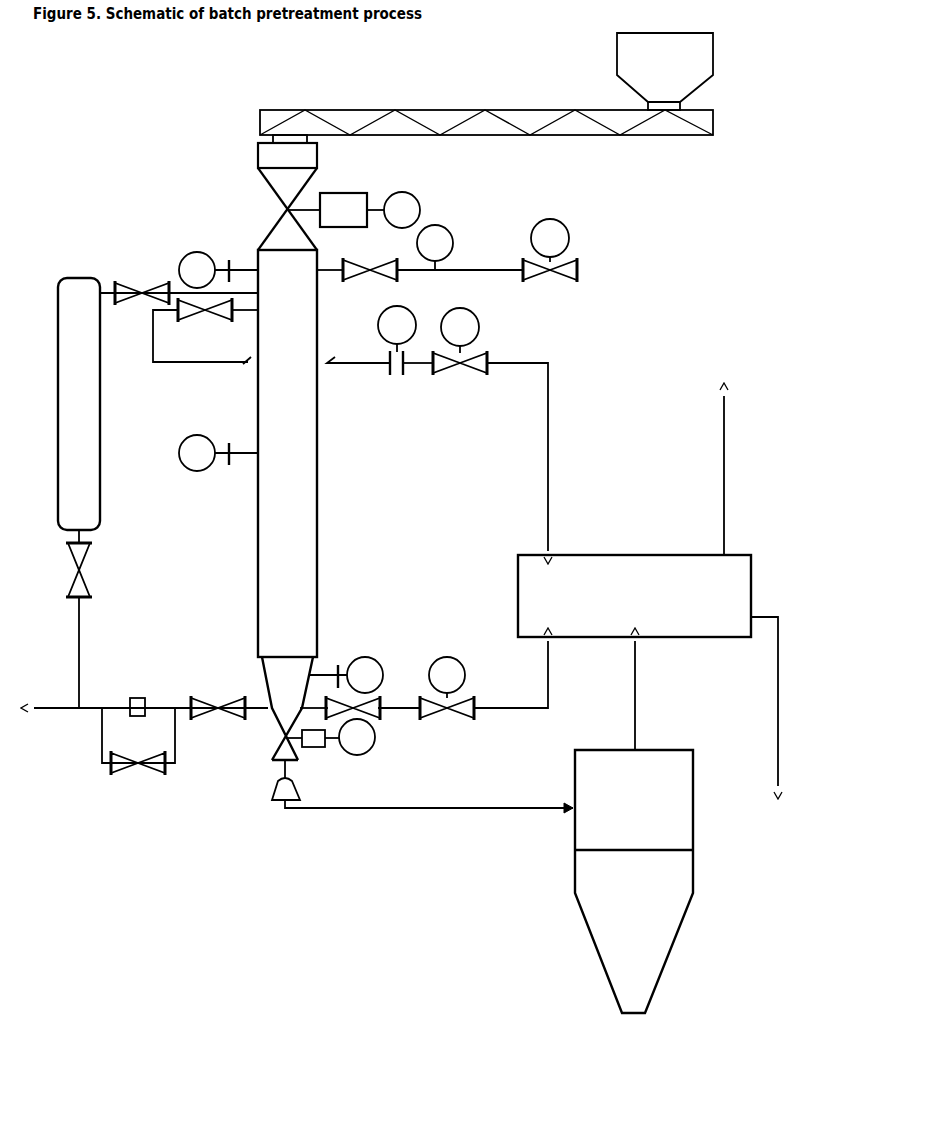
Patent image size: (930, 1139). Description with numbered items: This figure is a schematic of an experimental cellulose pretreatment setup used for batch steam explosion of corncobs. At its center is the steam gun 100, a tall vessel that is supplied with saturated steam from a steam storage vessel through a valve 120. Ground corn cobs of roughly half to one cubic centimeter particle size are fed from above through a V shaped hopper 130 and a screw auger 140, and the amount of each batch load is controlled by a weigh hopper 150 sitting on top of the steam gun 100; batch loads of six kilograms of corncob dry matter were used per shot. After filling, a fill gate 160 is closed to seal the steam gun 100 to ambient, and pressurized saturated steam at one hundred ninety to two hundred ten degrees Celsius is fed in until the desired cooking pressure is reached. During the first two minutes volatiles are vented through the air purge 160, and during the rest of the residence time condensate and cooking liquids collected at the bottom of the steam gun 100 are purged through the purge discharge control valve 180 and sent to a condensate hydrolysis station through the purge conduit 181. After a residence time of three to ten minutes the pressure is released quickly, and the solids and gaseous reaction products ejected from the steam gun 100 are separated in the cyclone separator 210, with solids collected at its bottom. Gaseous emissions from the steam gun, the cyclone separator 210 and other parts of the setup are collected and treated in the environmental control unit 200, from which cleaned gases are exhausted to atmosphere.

The steam gun 100 is at (288, 609).
The valve 120 is at (140, 308).
The V shaped hopper 130 is at (670, 57).
The screw auger 140 is at (670, 127).
The weigh hopper 150 is at (290, 184).
The fill gate 160 is at (345, 204).
The purge discharge control valve 180 is at (218, 720).
The purge conduit 181 is at (90, 714).
The environmental control unit 200 is at (78, 292).
The cyclone separator 210 is at (664, 927).